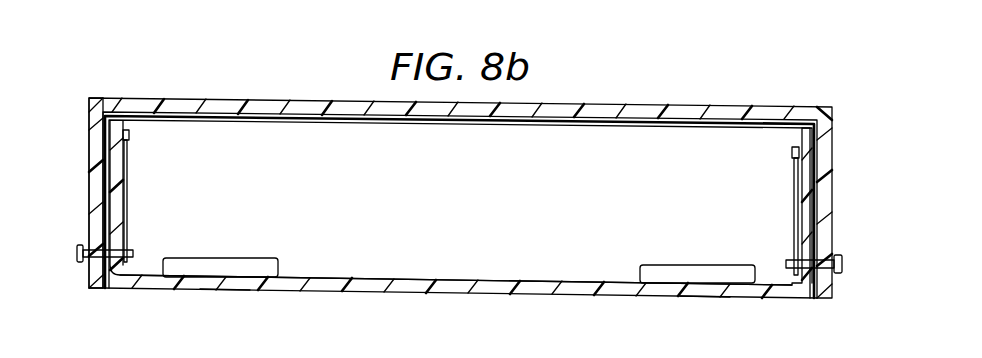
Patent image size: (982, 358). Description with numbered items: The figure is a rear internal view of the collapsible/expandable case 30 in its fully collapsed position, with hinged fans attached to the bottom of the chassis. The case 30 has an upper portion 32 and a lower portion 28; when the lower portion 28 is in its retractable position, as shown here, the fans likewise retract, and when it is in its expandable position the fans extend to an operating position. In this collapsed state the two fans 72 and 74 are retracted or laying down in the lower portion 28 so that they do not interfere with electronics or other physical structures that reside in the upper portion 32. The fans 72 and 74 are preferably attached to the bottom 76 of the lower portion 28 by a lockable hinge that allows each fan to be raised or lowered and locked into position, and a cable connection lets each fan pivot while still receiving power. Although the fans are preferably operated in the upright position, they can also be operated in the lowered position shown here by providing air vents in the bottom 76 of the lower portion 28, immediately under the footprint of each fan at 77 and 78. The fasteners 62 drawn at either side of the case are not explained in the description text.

The collapsible/expandable case 30 is at (311, 70).
The upper portion 32 is at (89, 169).
The lower portion 28 is at (783, 298).
The bottom 76 is at (438, 279).
The air vent location 77 is at (226, 290).
The air vent location 78 is at (700, 298).
The fan 72 is at (220, 258).
The fan 74 is at (698, 265).
The fastener bolt 62 is at (845, 262).